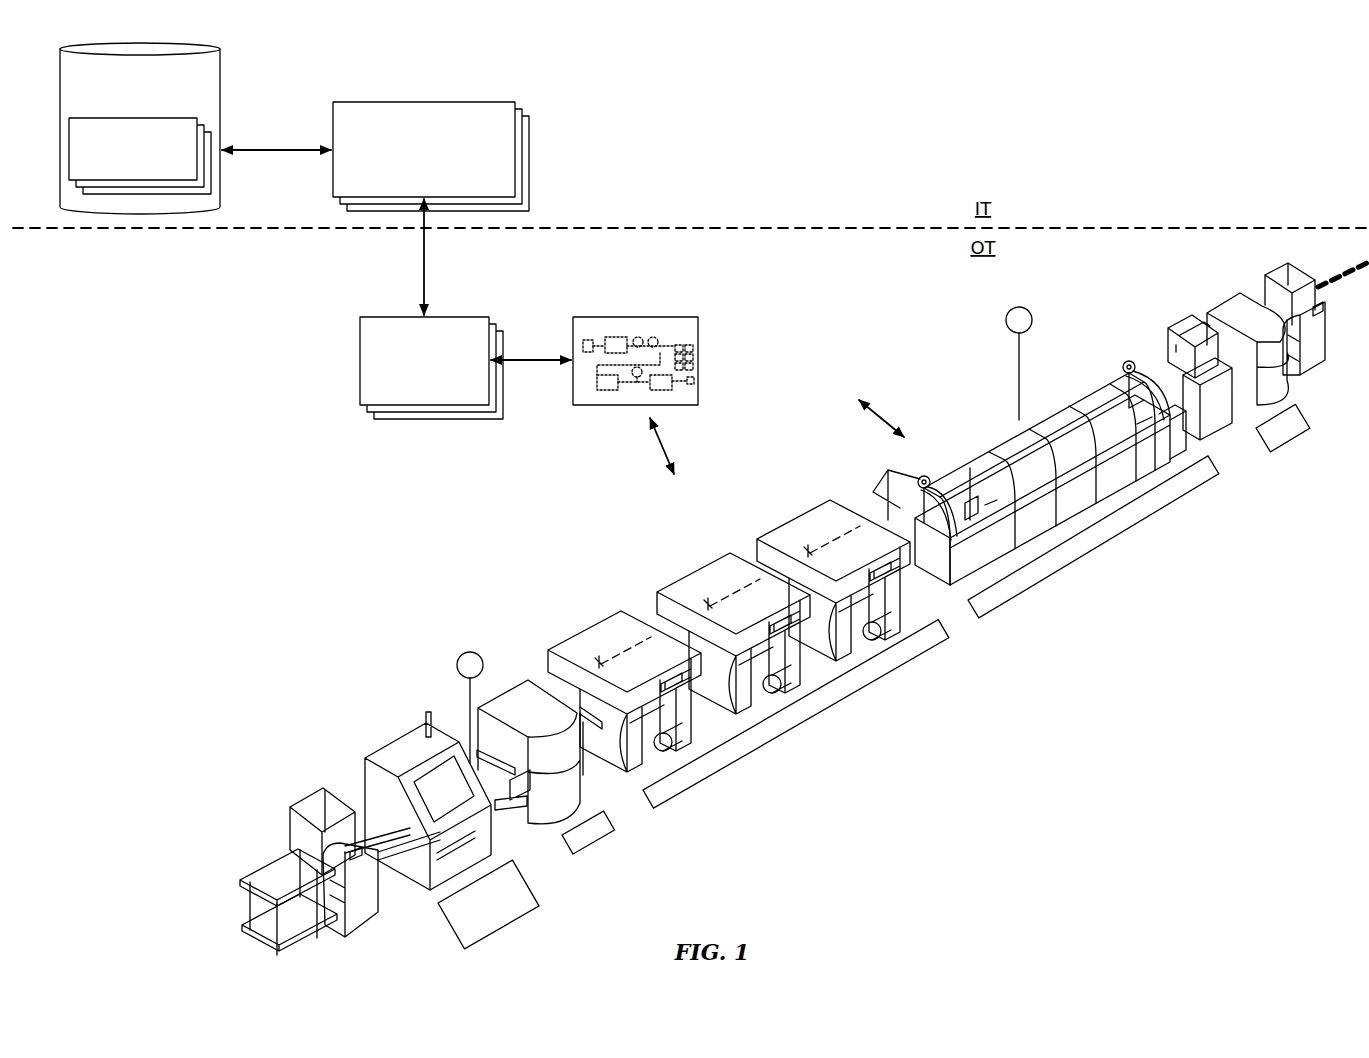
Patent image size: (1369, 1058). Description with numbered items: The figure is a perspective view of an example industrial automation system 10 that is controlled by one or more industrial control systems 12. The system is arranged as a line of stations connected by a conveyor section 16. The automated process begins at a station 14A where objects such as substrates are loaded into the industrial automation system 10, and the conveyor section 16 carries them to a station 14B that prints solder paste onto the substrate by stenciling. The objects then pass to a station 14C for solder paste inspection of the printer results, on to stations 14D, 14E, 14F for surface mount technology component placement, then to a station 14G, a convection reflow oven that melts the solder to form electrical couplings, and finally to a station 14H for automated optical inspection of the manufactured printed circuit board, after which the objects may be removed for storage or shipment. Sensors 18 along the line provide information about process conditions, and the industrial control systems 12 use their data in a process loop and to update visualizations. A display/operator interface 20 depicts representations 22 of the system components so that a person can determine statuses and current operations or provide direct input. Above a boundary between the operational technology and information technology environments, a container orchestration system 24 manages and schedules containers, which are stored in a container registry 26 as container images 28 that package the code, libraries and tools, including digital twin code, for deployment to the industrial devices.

The industrial automation system 10 is at (1310, 94).
The industrial control system 12 is at (425, 405).
The station 14A is at (305, 795).
The station 14B is at (388, 742).
The station 14C is at (503, 692).
The station 14D is at (585, 632).
The station 14E is at (700, 578).
The station 14F is at (800, 520).
The station 14G is at (1005, 430).
The station 14H is at (1172, 386).
The conveyor section 16 is at (350, 790).
The sensor 18 is at (460, 652).
The display/operator interface 20 is at (655, 346).
The representation 22 is at (623, 328).
The container orchestration system 24 is at (333, 126).
The container registry 26 is at (218, 126).
The container image 28 is at (133, 180).